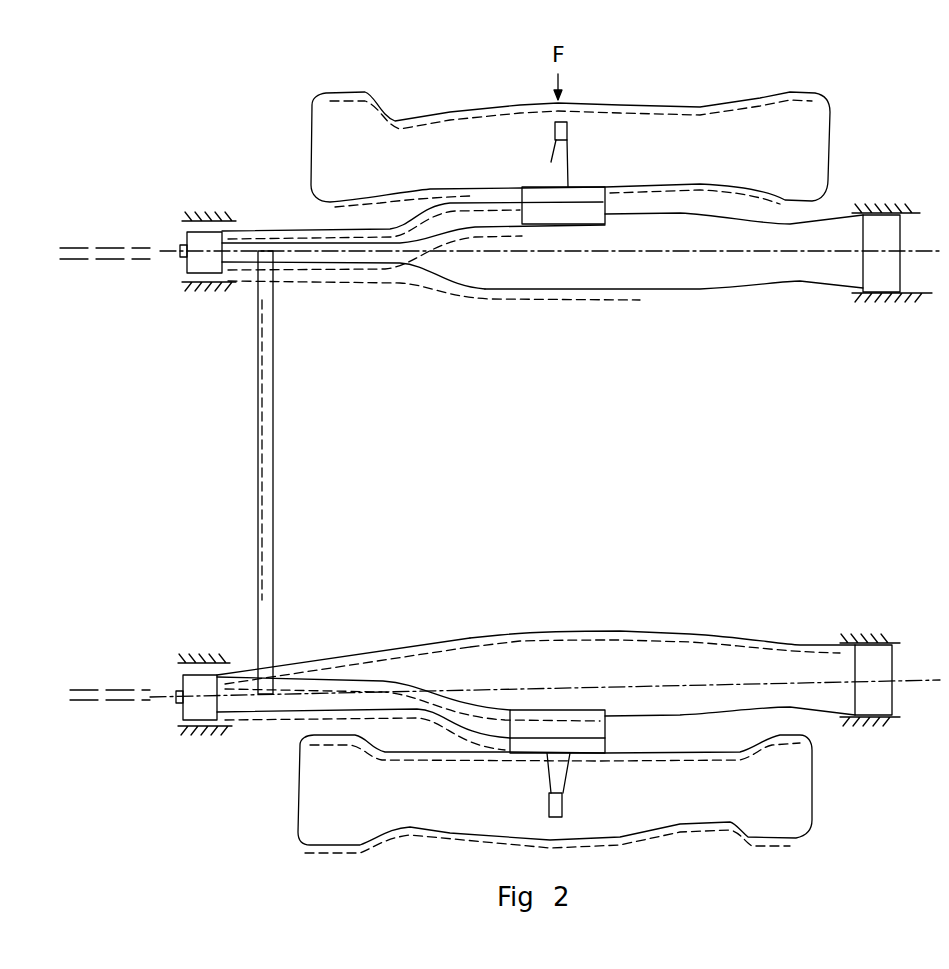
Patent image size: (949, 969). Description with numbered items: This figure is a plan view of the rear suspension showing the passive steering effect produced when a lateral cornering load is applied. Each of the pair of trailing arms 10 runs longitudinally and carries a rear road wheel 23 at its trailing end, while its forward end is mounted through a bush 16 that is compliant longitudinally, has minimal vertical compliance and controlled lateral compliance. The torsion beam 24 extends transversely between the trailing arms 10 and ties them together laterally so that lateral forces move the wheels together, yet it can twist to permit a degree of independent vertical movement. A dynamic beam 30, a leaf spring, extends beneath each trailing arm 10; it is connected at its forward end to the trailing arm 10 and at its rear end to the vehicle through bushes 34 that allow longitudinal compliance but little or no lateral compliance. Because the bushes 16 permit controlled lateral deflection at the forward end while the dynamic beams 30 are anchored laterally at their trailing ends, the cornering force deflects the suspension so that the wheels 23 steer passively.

The trailing arm 10 is at (333, 257).
The bush 16 is at (200, 240).
The rear road wheel 23 is at (810, 120).
The torsion beam 24 is at (268, 418).
The dynamic beam 30 is at (692, 268).
The bush 34 is at (880, 289).